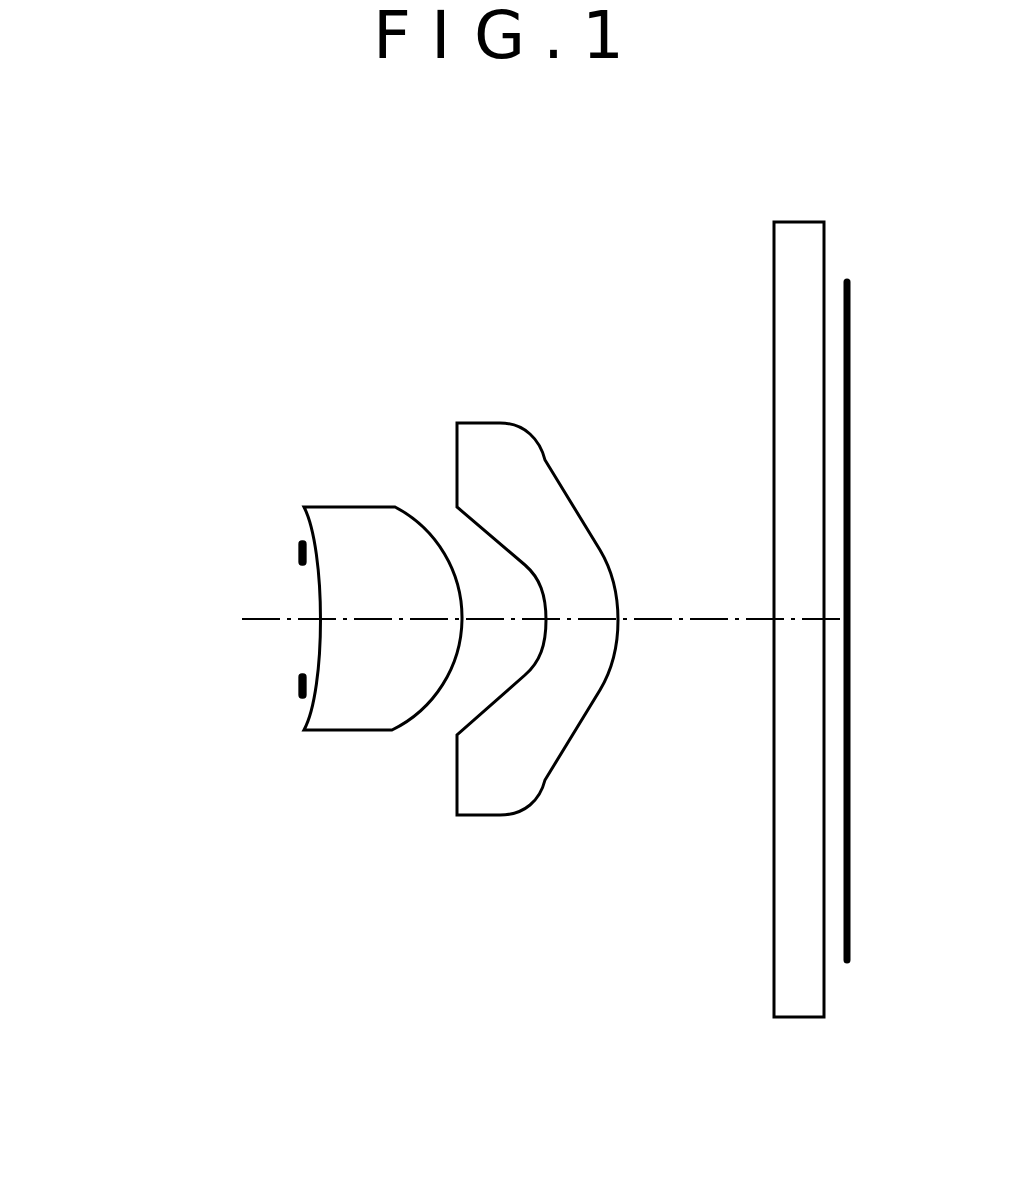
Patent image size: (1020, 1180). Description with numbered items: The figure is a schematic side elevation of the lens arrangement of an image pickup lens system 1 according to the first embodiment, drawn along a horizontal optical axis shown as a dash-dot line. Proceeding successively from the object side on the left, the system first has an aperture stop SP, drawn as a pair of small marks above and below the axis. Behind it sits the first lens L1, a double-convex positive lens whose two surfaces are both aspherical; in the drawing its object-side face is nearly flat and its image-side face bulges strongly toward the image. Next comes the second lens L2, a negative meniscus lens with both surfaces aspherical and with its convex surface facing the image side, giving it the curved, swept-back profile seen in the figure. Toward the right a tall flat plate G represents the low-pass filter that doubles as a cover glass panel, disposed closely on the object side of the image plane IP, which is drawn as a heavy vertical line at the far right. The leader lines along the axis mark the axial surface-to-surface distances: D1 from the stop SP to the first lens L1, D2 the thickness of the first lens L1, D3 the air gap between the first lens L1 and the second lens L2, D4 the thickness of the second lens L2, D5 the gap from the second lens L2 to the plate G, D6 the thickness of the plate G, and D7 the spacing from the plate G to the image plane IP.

The image pickup lens system 1 is at (132, 495).
The aperture stop SP is at (300, 545).
The first lens L1 is at (365, 520).
The second lens L2 is at (503, 438).
The low-pass filter doubling as a cover glass panel G is at (790, 280).
The image plane IP is at (843, 295).
The axial surface-to-surface distance D1 is at (315, 620).
The axial surface-to-surface distance D2 is at (375, 620).
The axial surface-to-surface distance between the first lens and the second lens D3 is at (507, 620).
The axial surface-to-surface distance D4 is at (580, 620).
The axial surface-to-surface distance D5 is at (703, 620).
The axial surface-to-surface distance D6 is at (790, 620).
The axial surface-to-surface distance D7 is at (832, 620).